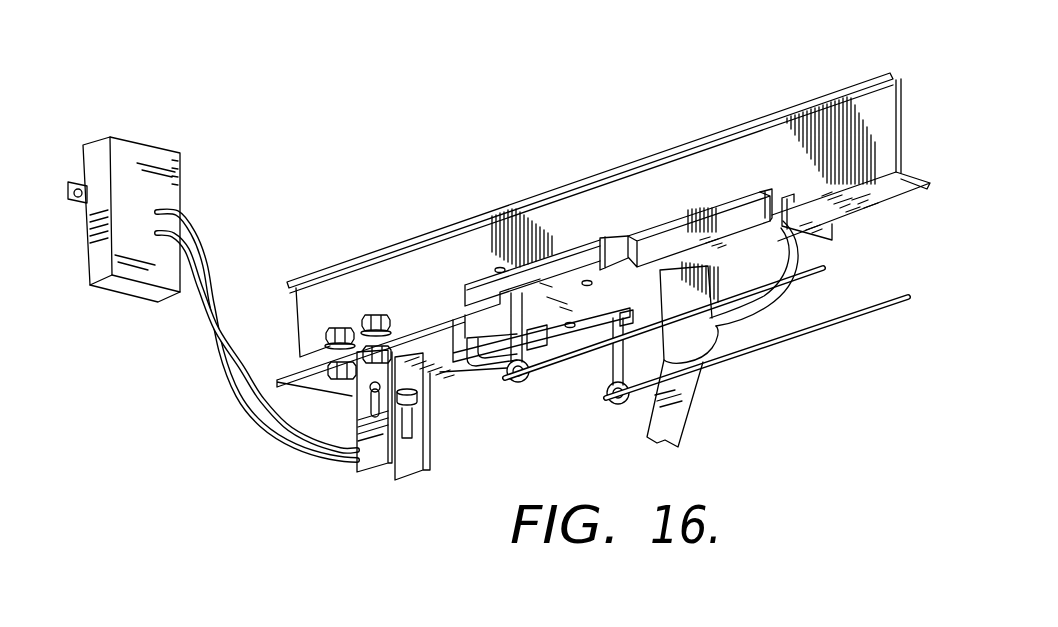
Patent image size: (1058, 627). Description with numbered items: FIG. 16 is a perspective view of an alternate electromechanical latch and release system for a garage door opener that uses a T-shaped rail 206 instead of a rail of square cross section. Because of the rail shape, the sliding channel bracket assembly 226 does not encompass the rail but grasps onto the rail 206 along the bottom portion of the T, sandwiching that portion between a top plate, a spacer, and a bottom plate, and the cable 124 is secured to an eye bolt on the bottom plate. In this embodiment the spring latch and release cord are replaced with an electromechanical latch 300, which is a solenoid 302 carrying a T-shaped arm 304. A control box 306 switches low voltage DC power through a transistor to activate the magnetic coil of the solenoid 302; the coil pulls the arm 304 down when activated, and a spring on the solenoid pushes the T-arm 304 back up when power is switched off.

The cable 124 is at (833, 326).
The T-shaped rail 206 is at (883, 100).
The sliding channel bracket assembly 226 is at (567, 243).
The electromechanical latch 300 is at (372, 480).
The solenoid 302 is at (412, 457).
The T-shaped arm 304 is at (415, 395).
The control box 306 is at (148, 153).